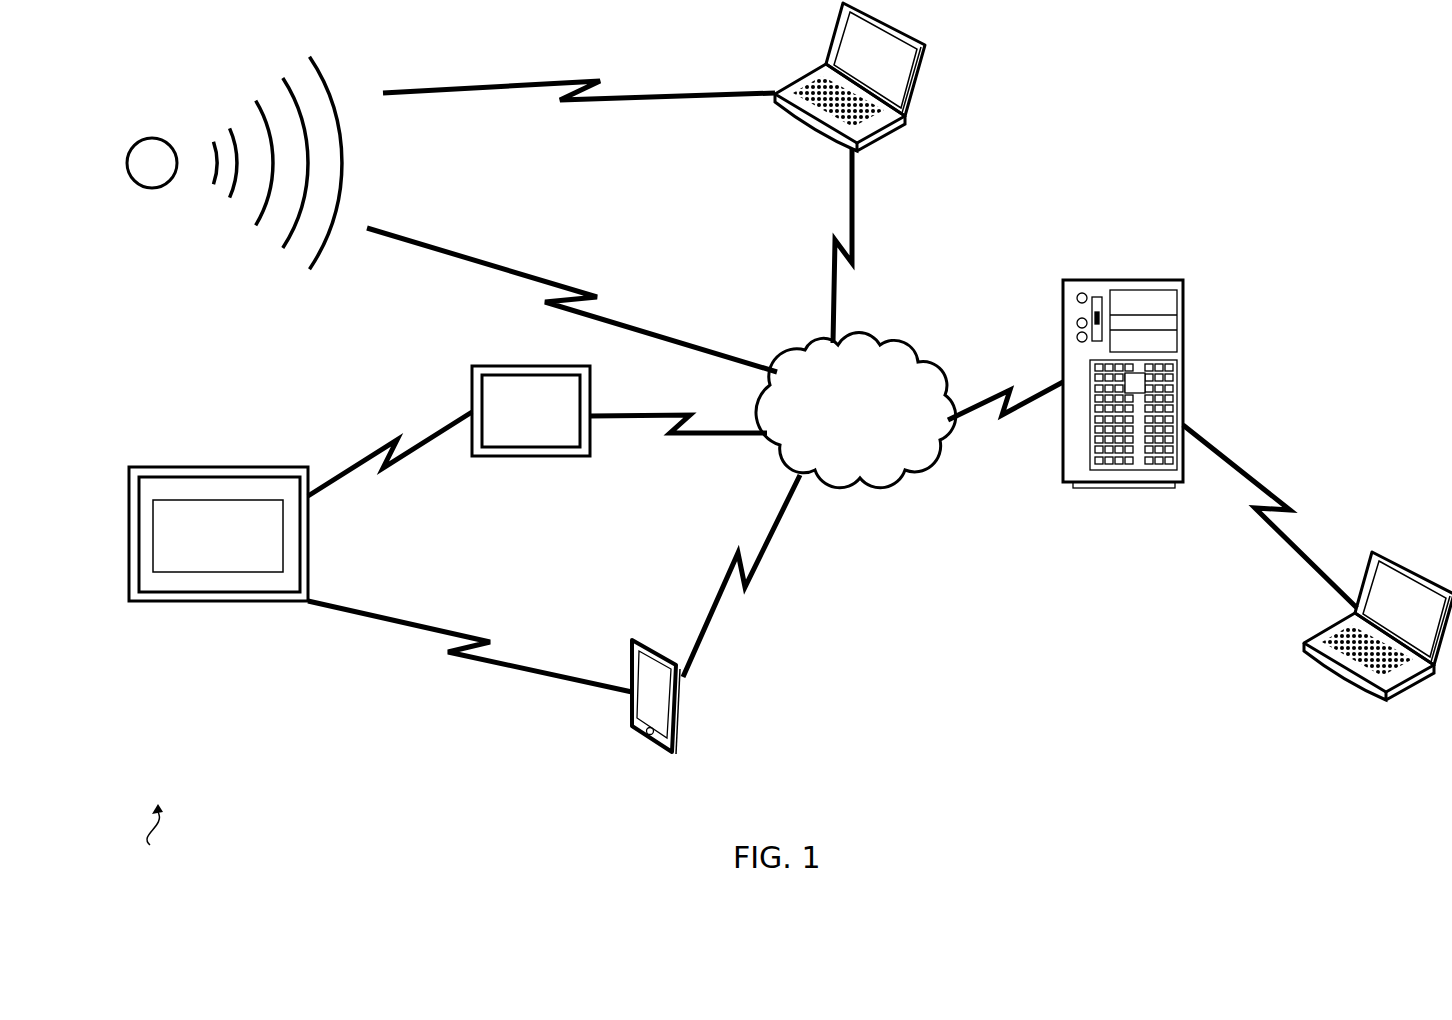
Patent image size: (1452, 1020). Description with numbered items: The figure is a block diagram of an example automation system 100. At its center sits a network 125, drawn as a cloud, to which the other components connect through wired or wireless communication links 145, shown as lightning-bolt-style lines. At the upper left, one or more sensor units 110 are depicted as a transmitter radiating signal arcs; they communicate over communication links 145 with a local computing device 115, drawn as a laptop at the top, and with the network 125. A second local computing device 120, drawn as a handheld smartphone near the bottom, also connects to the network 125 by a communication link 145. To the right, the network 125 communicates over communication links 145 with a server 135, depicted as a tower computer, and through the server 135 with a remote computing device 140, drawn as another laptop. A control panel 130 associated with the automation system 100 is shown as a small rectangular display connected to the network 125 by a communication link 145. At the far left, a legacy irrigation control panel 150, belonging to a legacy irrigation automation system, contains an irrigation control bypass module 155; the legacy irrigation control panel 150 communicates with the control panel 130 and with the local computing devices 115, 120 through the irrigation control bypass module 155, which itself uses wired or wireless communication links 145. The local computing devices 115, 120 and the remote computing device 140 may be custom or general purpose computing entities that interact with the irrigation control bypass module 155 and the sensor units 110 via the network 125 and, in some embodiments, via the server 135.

The automation system 100 is at (135, 839).
The sensor units 110 is at (152, 188).
The local computing device 115 is at (820, 138).
The local computing device 120 is at (645, 735).
The network 125 is at (880, 345).
The control panel 130 is at (535, 456).
The server 135 is at (1146, 280).
The remote computing device 140 is at (1350, 688).
The communication links 145 is at (510, 82).
The legacy irrigation control panel 150 is at (217, 576).
The irrigation control bypass module 155 is at (218, 536).